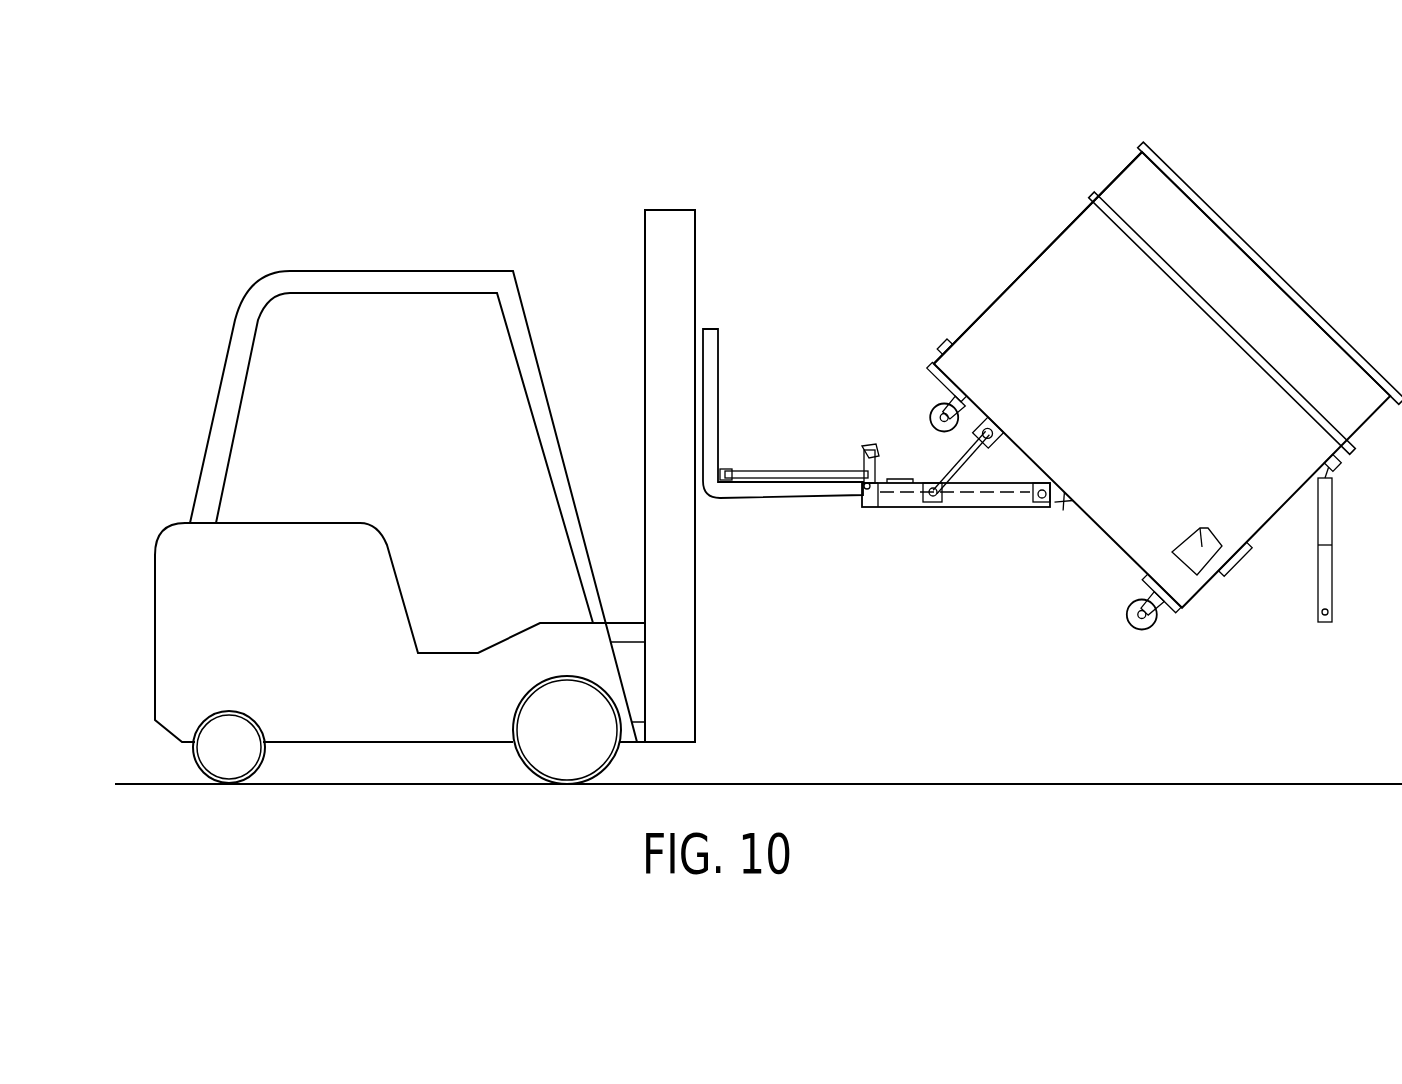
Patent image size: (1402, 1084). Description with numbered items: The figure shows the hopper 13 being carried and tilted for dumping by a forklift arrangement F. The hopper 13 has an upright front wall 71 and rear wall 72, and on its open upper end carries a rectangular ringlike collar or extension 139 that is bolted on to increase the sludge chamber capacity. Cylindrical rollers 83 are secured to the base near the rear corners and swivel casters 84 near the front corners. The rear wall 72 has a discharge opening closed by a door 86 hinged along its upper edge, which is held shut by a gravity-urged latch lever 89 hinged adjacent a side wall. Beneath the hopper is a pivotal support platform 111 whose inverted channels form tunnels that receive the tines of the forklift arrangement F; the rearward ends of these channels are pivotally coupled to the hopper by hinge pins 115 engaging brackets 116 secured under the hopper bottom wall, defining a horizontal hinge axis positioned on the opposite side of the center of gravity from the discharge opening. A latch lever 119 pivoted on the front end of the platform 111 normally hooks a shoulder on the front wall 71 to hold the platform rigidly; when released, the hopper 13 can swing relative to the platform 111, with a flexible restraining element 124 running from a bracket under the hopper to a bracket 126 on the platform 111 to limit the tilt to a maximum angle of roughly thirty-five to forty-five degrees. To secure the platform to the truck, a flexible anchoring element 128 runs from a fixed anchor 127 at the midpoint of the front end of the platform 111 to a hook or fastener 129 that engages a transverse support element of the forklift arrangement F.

The hopper 13 is at (1168, 375).
The front wall 71 is at (1007, 292).
The rectangular ringlike collar or extension 139 is at (1289, 311).
The cylindrical rollers 83 is at (930, 407).
The swivel-type rollers or casters 84 is at (1140, 628).
The latch lever 89 is at (1228, 567).
The rear wall 72 is at (1337, 464).
The door 86 is at (1333, 580).
The forklift arrangement F is at (763, 493).
The hook or fastener 129 is at (729, 470).
The elongate flexible anchoring element 128 is at (798, 470).
The latch lever 119 is at (866, 462).
The fixed anchor 127 is at (867, 473).
The pivotal support platform 111 is at (890, 513).
The bracket 126 is at (935, 502).
The elongate flexible restraining element 124 is at (965, 460).
The hinge pins 115 is at (1041, 503).
The brackets 116 is at (1060, 505).